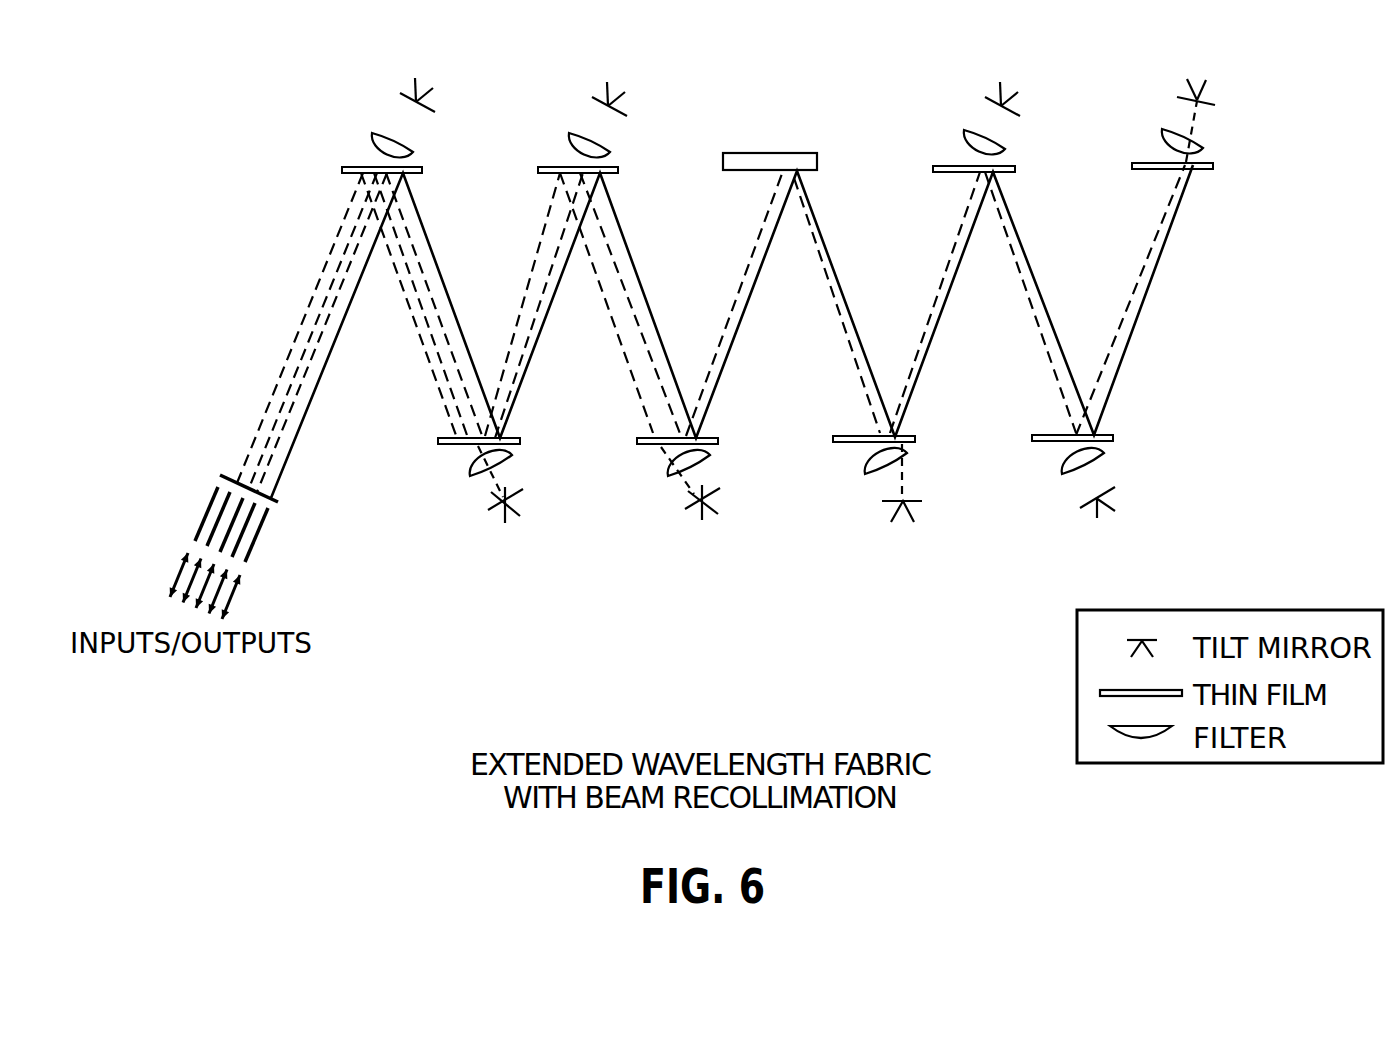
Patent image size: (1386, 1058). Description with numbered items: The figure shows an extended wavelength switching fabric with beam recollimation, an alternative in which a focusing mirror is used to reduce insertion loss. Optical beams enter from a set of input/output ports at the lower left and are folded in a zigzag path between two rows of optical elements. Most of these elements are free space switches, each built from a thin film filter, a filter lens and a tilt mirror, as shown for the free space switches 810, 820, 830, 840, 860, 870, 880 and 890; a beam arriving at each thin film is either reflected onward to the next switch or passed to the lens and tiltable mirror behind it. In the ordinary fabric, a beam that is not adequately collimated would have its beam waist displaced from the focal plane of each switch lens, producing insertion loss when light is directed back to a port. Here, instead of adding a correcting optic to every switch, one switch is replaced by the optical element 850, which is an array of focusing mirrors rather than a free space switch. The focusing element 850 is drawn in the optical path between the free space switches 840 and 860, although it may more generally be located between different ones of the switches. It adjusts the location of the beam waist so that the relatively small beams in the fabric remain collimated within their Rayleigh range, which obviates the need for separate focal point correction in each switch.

The free space switch 810 is at (380, 64).
The free space switch 820 is at (482, 538).
The free space switch 830 is at (575, 64).
The free space switch 840 is at (682, 538).
The array of focusing mirrors 850 is at (772, 152).
The free space switch 860 is at (878, 535).
The free space switch 870 is at (977, 64).
The free space switch 880 is at (1073, 535).
The free space switch 890 is at (1228, 78).